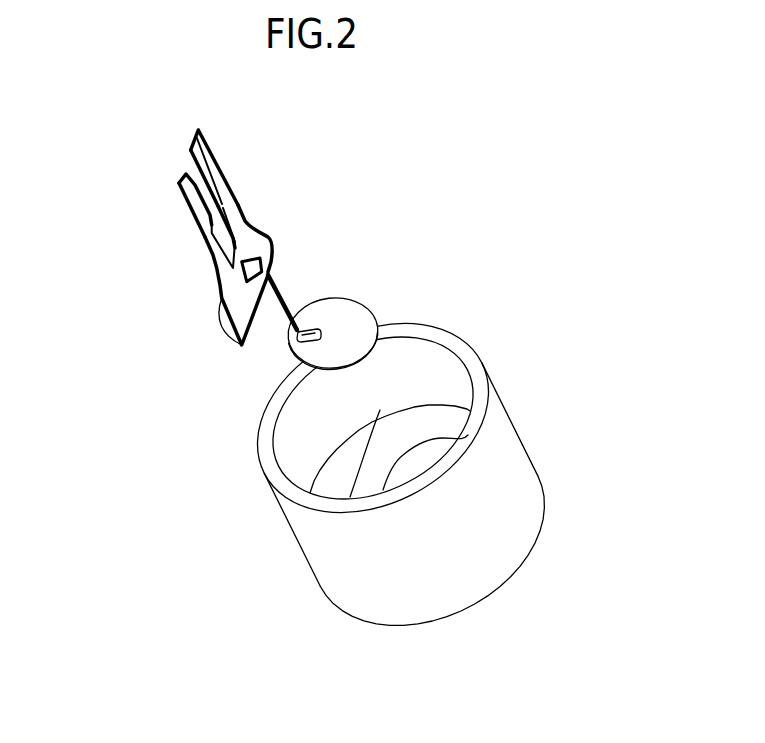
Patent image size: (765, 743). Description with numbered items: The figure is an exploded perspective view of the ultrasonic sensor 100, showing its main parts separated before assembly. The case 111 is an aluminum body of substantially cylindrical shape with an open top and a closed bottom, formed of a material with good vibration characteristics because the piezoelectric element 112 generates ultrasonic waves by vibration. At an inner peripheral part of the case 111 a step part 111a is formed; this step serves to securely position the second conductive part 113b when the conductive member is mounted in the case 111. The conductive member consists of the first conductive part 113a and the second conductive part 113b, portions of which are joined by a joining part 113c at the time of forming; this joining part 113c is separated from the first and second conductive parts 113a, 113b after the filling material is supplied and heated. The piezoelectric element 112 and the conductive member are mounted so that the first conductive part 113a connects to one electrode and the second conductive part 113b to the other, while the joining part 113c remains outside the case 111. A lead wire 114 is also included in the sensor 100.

The ultrasonic sensor 100 is at (60, 123).
The case 111 is at (295, 490).
The step part 111a is at (337, 477).
The piezoelectric element 112 is at (329, 375).
The first conductive part 113a is at (236, 207).
The second conductive part 113b is at (215, 248).
The joining part 113c is at (190, 181).
The lead wire 114 is at (283, 296).